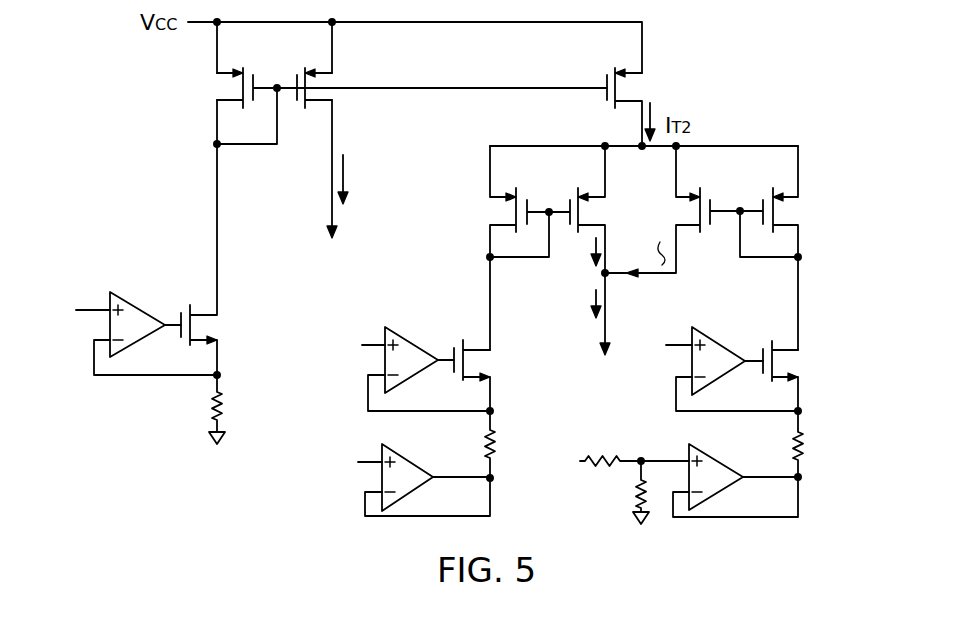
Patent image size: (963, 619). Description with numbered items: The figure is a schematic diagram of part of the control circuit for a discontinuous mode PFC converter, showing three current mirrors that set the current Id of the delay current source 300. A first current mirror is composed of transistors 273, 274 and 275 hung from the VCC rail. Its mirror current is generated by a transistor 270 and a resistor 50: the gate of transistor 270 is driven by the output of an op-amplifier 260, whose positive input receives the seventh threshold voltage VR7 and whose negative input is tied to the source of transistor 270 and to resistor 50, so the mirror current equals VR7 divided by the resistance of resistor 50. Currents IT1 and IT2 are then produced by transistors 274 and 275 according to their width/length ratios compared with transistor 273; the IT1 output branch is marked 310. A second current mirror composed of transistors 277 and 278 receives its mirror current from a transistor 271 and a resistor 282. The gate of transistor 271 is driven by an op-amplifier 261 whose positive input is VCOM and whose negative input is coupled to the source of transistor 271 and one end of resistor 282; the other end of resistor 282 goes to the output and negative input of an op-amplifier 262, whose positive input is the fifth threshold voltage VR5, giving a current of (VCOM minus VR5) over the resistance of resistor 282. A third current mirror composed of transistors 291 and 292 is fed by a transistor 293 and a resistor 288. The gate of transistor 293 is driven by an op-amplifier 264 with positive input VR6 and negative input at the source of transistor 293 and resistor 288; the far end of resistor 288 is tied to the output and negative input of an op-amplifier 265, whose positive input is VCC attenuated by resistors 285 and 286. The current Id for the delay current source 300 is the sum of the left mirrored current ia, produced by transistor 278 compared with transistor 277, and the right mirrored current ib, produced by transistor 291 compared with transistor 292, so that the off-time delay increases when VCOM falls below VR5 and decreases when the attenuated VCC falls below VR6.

The transistor 273 is at (216, 88).
The transistor 274 is at (340, 97).
The transistor 275 is at (640, 88).
The current IT1 output 310 is at (345, 174).
The transistor 277 is at (488, 210).
The transistor 278 is at (610, 212).
The transistor 291 is at (708, 227).
The transistor 292 is at (800, 213).
The delay current source 300 is at (592, 303).
The op-amplifier 260 is at (133, 297).
The transistor 270 is at (218, 328).
The resistor 50 is at (231, 408).
The op-amplifier 261 is at (405, 328).
The transistor 271 is at (490, 368).
The resistor 282 is at (497, 445).
The op-amplifier 262 is at (412, 453).
The resistor 285 is at (620, 432).
The resistor 286 is at (628, 506).
The op-amplifier 265 is at (717, 453).
The resistor 288 is at (813, 448).
The op-amplifier 264 is at (717, 337).
The transistor 293 is at (800, 367).